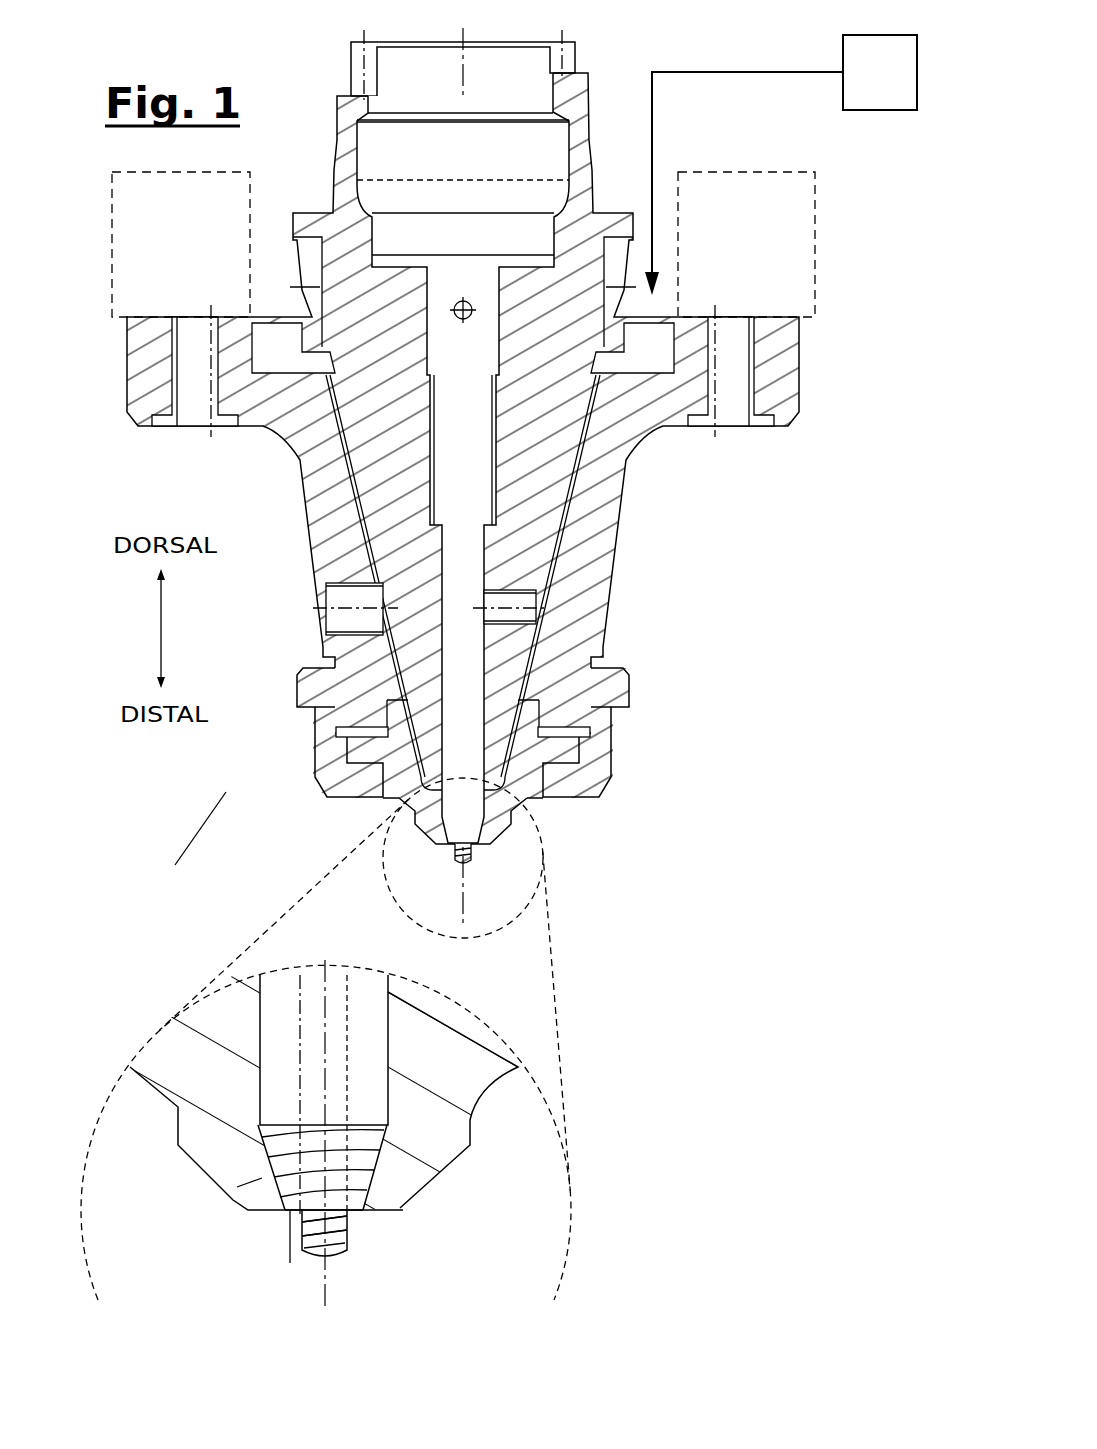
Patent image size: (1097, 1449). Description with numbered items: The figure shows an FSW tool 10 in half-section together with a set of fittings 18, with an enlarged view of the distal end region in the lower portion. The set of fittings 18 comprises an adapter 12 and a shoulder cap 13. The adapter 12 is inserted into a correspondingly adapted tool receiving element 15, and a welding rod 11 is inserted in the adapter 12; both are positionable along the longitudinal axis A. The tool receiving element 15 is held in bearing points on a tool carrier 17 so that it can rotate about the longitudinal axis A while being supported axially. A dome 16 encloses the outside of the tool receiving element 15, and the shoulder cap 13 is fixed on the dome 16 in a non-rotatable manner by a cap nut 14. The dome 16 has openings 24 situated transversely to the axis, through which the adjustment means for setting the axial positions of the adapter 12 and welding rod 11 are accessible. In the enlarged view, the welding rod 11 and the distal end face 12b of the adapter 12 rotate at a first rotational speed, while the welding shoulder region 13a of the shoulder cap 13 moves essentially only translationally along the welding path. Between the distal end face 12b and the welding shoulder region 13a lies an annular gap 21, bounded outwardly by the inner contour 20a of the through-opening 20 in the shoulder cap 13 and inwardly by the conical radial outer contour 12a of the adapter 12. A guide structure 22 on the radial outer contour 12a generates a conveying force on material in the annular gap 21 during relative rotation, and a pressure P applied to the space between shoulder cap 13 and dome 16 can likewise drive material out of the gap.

The FSW tool 10 is at (226, 792).
The set of fittings 18 is at (200, 828).
The welding rod 11 is at (468, 878).
The adapter 12 is at (490, 847).
The radial outer contour 12a is at (287, 1182).
The distal end face 12b is at (388, 1253).
The shoulder cap 13 is at (410, 833).
The welding shoulder region 13a is at (324, 1114).
The cap nut 14 is at (607, 757).
The tool receiving element 15 is at (535, 553).
The dome 16 is at (612, 487).
The tool carrier 17 is at (746, 212).
The through-opening 20 is at (206, 1217).
The inner contour 20a is at (324, 1226).
The annular gap 21 is at (295, 1254).
The guide structure 22 is at (438, 848).
The openings 24 is at (352, 618).
The longitudinal axis A is at (433, 923).
The pressure direction P is at (781, 165).